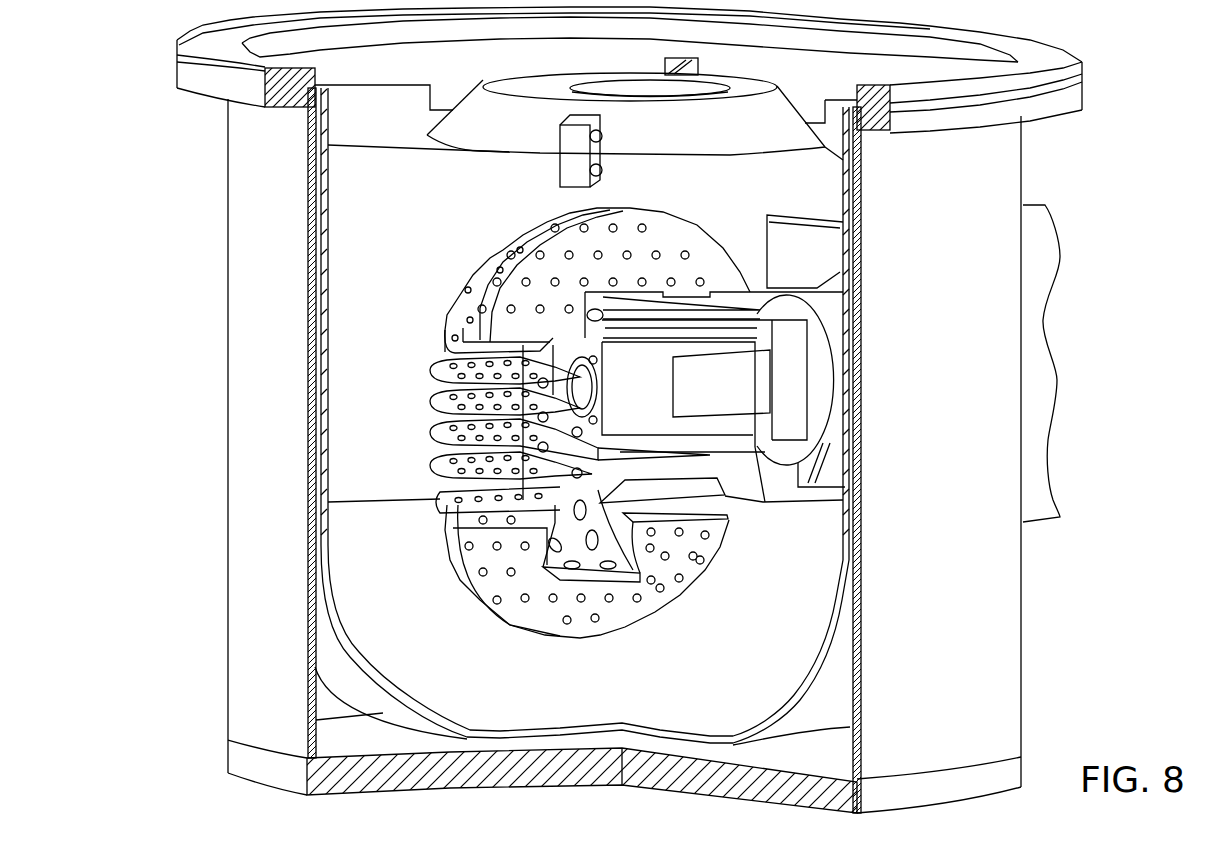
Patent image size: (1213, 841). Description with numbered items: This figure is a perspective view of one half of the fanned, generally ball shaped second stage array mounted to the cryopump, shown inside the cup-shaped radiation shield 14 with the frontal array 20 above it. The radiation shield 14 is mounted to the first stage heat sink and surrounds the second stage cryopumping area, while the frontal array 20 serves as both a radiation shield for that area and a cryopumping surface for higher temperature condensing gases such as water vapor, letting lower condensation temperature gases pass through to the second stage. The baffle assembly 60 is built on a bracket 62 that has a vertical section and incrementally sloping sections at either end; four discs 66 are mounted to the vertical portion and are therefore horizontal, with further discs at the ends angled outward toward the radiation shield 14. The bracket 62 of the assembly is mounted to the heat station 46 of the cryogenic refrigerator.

The radiation shield 14 is at (322, 452).
The frontal array 20 is at (781, 79).
The heat station 46 is at (655, 401).
The strainer assembly 60 is at (405, 273).
The bracket 62 is at (575, 505).
The discs 66 is at (441, 468).